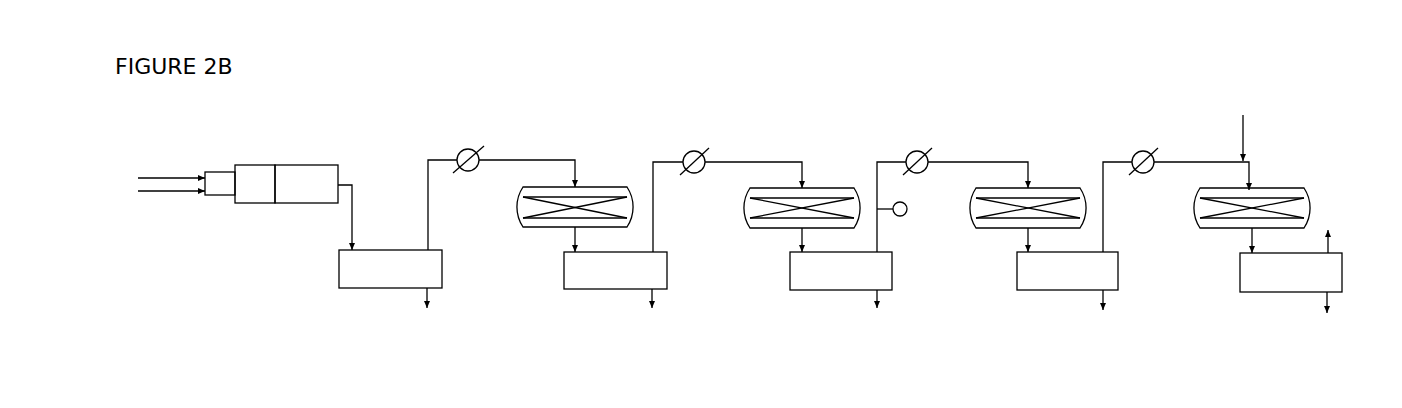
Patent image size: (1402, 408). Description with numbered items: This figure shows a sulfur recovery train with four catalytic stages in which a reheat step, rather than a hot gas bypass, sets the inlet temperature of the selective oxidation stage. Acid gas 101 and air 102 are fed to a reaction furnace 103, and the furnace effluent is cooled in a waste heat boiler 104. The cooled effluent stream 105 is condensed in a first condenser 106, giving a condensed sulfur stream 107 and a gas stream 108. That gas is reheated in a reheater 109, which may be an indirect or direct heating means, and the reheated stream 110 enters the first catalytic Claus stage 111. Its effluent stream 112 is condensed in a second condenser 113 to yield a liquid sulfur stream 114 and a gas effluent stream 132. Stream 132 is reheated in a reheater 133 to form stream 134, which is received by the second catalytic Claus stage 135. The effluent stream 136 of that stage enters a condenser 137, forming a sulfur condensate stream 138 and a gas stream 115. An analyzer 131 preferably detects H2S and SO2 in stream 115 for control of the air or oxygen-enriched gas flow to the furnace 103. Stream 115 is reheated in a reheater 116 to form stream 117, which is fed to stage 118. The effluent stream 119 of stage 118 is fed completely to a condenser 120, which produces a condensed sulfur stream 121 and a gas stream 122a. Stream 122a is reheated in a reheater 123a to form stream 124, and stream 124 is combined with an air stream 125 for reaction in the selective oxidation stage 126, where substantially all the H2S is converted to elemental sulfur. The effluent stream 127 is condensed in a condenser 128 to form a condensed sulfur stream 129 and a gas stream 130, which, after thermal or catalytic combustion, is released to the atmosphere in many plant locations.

The acid gas 101 is at (145, 172).
The air 102 is at (145, 200).
The reaction furnace 103 is at (240, 171).
The waste heat boiler 104 is at (306, 171).
The cooled effluent stream 105 is at (345, 235).
The first condenser 106 is at (390, 269).
The condensed sulfur stream 107 is at (425, 314).
The gas stream 108 is at (452, 205).
The reheater 109 is at (472, 145).
The reheated stream 110 is at (527, 162).
The first catalytic Claus stage 111 is at (564, 222).
The effluent stream 112 is at (568, 232).
The second condenser 113 is at (615, 270).
The liquid sulfur stream 114 is at (656, 314).
The gas effluent stream 132 is at (653, 194).
The reheater 133 is at (701, 146).
The reheated stream 134 is at (753, 163).
The second catalytic Claus stage 135 is at (779, 215).
The effluent stream 136 is at (793, 233).
The condenser 137 is at (841, 271).
The sulfur condensate stream 138 is at (877, 315).
The gas stream 115 is at (879, 193).
The analyzer 131 is at (905, 222).
The reheater 116 is at (924, 146).
The reheated stream 117 is at (978, 162).
The selective reduction stage 118 is at (1034, 196).
The effluent stream 119 is at (1020, 237).
The condenser 120 is at (1067, 271).
The condensed sulfur stream 121 is at (1111, 316).
The gas stream 122a is at (1098, 193).
The reheater 123a is at (1162, 149).
The reheated stream 124 is at (1201, 164).
The air stream 125 is at (1244, 126).
The selective oxidation stage 126 is at (1258, 197).
The effluent stream 127 is at (1245, 240).
The condenser 128 is at (1291, 272).
The condensed sulfur stream 129 is at (1335, 317).
The gas stream 130 is at (1345, 230).